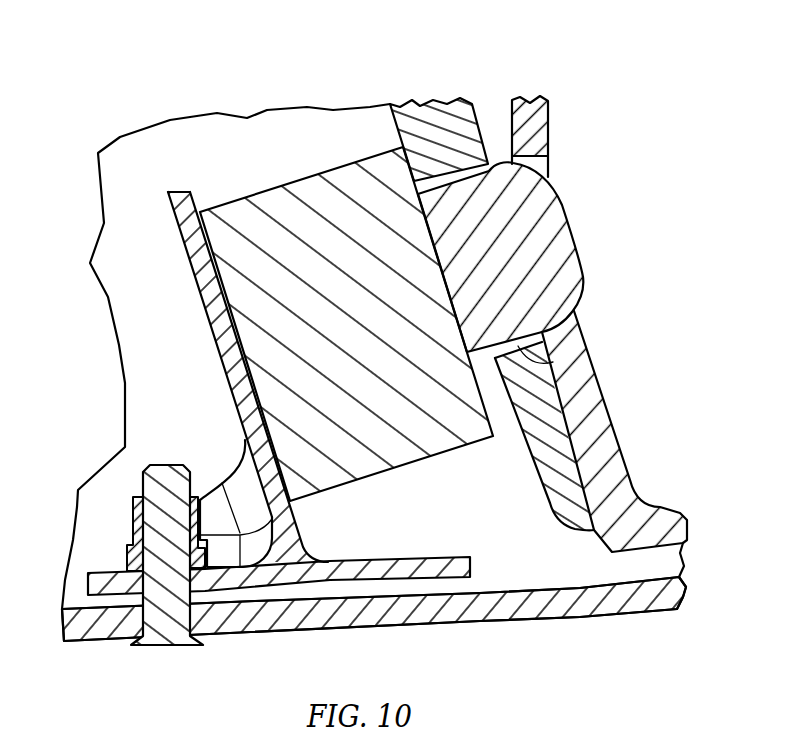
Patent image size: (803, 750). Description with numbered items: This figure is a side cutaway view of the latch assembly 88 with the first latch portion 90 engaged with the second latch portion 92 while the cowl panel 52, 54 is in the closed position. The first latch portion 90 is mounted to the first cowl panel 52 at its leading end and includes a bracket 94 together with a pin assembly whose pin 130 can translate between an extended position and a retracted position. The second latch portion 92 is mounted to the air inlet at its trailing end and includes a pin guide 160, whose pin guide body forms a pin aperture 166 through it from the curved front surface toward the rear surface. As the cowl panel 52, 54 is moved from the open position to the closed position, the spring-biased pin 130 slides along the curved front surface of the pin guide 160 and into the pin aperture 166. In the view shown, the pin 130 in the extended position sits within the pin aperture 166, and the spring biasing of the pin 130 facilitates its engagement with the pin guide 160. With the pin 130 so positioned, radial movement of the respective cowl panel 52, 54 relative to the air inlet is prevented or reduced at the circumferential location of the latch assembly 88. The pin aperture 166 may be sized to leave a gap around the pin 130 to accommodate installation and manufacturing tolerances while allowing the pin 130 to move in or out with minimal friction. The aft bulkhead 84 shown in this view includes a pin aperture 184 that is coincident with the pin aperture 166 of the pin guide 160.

The first latch portion 90 is at (211, 153).
The second latch portion 92 is at (418, 96).
The pin guide 160 is at (452, 128).
The aft bulkhead 84 is at (532, 115).
The pin 130 is at (542, 225).
The pin aperture 184 is at (567, 325).
The pin aperture 166 is at (553, 360).
The bracket 94 is at (285, 538).
The first cowl panel 52 is at (497, 613).
The second cowl panel 54 is at (374, 609).
The latch assembly 88 is at (266, 651).